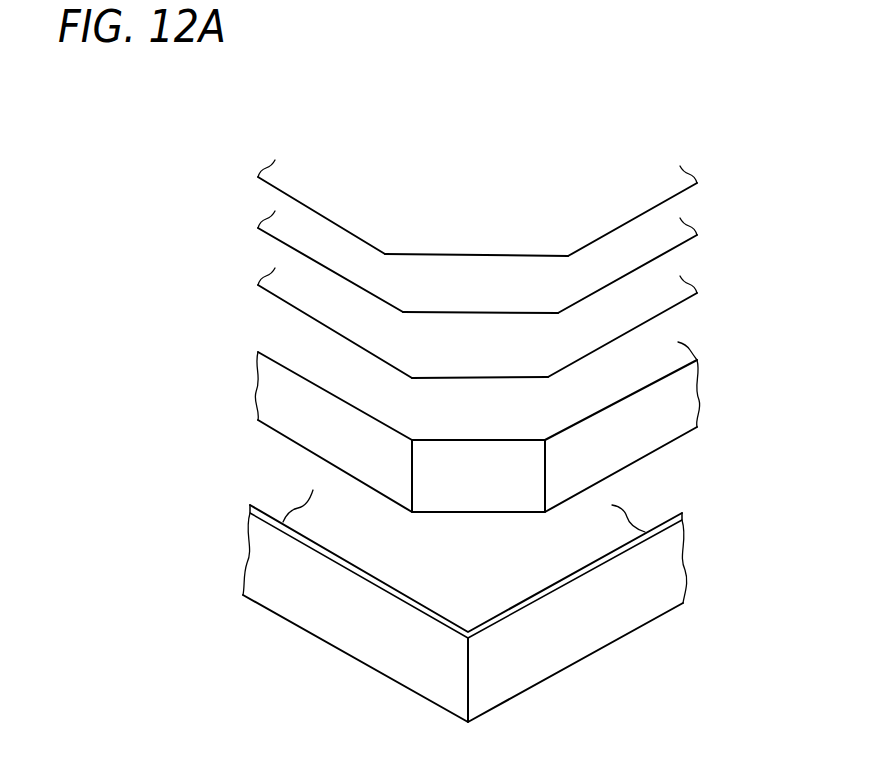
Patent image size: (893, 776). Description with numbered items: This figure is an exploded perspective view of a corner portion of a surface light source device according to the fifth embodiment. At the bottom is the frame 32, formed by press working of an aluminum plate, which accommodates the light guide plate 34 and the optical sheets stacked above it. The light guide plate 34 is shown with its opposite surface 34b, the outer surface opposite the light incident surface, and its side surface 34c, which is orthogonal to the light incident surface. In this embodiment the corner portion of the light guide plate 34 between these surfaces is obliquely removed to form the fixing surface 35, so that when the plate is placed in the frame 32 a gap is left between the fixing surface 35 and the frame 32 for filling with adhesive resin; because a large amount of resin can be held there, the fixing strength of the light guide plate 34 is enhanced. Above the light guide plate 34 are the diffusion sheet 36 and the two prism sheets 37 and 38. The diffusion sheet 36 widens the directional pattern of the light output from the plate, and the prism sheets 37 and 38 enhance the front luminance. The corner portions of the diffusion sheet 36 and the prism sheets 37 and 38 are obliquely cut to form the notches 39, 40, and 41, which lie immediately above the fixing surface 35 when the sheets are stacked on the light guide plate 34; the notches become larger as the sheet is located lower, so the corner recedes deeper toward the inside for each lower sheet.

The frame 32 is at (593, 617).
The light guide plate 34 is at (475, 460).
The opposite surface 34b is at (633, 435).
The side surface 34c is at (330, 438).
The fixing surface 35 is at (468, 483).
The diffusion sheet 36 is at (477, 283).
The prism sheet 37 is at (477, 231).
The prism sheet 38 is at (477, 189).
The notch 39 is at (450, 375).
The notch 40 is at (498, 313).
The notch 41 is at (547, 256).